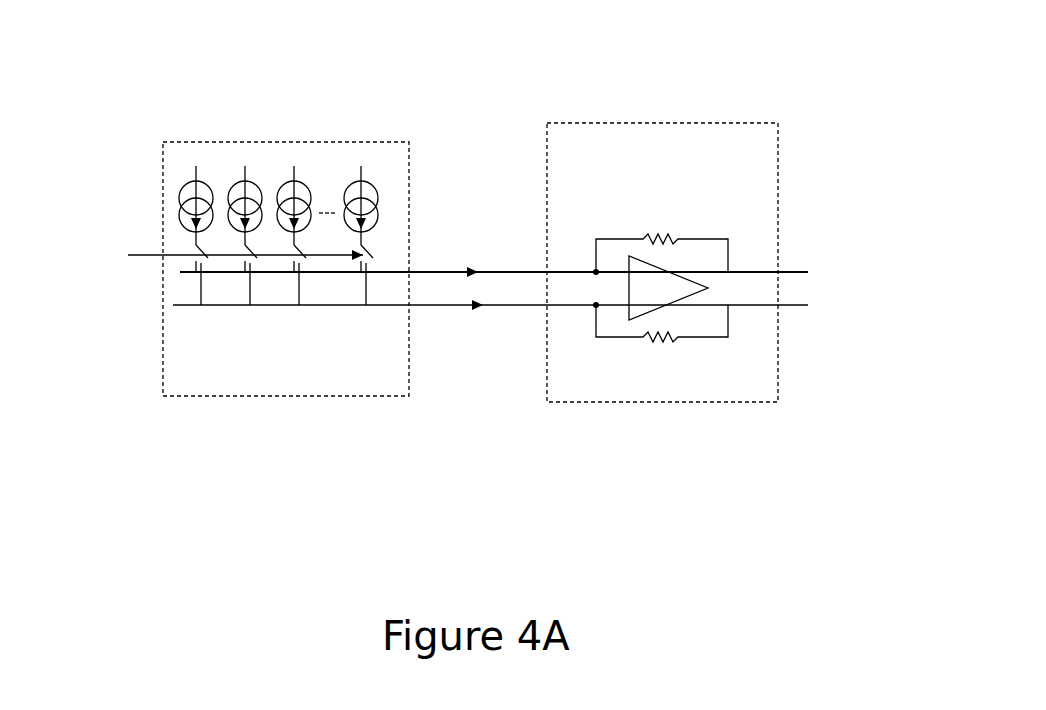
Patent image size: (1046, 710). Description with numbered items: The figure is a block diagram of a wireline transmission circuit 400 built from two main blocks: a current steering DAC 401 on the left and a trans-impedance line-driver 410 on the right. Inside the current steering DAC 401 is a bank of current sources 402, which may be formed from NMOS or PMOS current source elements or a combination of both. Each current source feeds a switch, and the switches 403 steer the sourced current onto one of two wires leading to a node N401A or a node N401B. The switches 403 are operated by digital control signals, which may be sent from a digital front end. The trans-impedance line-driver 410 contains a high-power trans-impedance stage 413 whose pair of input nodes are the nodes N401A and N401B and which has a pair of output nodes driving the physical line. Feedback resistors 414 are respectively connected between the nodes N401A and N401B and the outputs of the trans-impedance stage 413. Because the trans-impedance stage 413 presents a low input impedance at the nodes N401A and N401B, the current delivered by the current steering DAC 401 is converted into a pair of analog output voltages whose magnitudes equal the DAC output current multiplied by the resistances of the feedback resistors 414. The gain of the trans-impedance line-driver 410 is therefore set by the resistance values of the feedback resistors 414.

The wireline transmission circuit 400 is at (678, 78).
The current steering DAC 401 is at (370, 142).
The current sources 402 is at (390, 188).
The switches 403 is at (182, 263).
The trans-impedance line-driver 410 is at (747, 123).
The trans-impedance stage 413 is at (671, 298).
The feedback resistors 414 is at (678, 235).
The node N401A is at (593, 272).
The node N401B is at (592, 307).